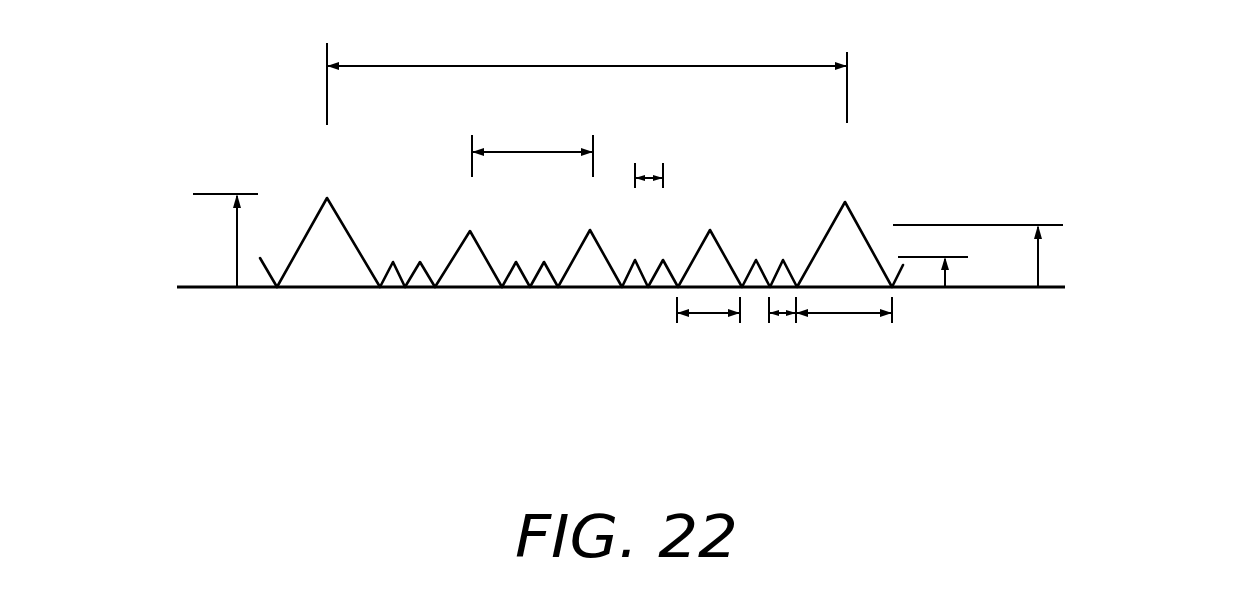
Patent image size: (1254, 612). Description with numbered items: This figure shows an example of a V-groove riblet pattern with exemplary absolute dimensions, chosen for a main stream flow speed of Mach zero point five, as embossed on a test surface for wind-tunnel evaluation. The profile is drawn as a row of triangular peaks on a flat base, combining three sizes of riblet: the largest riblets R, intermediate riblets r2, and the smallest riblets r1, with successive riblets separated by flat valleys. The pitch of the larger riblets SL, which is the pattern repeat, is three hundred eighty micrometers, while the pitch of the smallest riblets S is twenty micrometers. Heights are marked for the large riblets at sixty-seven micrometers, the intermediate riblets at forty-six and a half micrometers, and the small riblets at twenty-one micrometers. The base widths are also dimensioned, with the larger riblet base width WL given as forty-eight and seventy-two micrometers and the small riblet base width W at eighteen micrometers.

The larger riblet R is at (313, 232).
The smallest riblet r1 is at (398, 278).
The intermediate riblet r2 is at (463, 246).
The pitch of larger riblets SL is at (587, 105).
The pitch of smaller riblets S is at (646, 184).
The base width of larger riblets WL is at (702, 313).
The base width of smaller riblets W is at (783, 313).